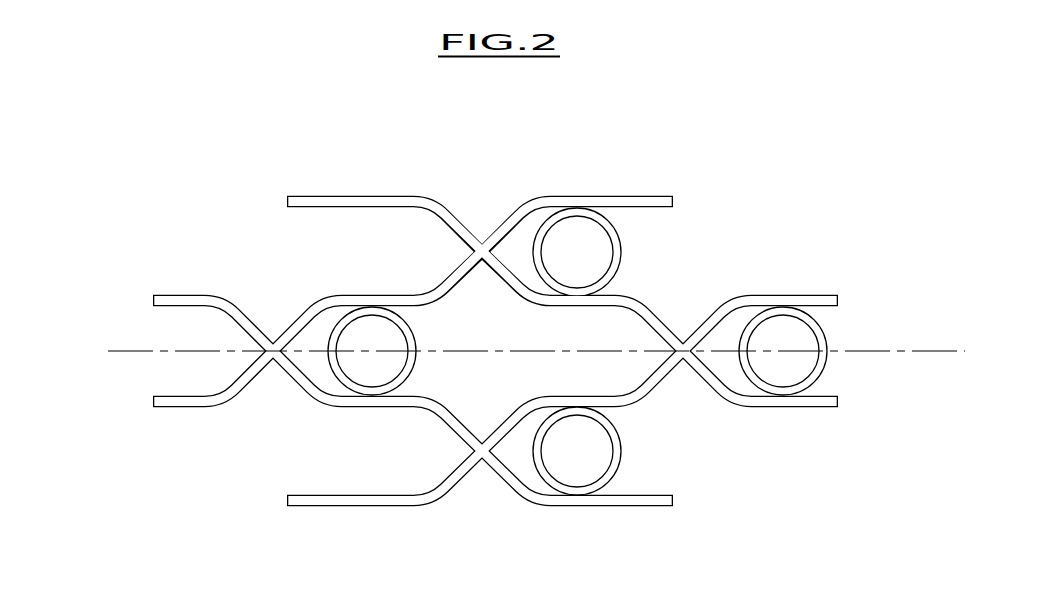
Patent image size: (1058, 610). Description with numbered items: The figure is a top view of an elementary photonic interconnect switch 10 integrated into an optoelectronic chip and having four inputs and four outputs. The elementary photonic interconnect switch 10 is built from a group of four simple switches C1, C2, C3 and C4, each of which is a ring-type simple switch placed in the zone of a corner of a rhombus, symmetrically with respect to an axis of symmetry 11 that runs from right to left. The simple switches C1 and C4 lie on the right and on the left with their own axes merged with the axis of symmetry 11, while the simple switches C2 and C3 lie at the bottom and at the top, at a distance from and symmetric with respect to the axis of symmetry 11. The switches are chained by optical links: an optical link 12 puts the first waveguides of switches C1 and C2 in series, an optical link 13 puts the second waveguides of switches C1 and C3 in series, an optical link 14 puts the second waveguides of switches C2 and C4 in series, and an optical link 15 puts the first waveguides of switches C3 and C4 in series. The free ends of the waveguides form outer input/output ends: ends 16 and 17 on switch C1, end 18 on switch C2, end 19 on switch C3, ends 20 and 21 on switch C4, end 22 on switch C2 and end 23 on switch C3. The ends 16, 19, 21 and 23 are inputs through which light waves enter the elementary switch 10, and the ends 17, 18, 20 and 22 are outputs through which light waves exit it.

The elementary photonic interconnect switch 10 is at (308, 156).
The axis of symmetry 11 is at (935, 350).
The optical link 12 is at (636, 406).
The optical link 13 is at (636, 296).
The optical link 14 is at (421, 407).
The optical link 15 is at (418, 294).
The outer input/output end 16 is at (917, 302).
The outer input/output end 17 is at (907, 398).
The outer input/output end 18 is at (673, 503).
The outer input/output end 19 is at (755, 203).
The outer input/output end 20 is at (128, 402).
The outer input/output end 21 is at (43, 302).
The outer input/output end 22 is at (287, 502).
The outer input/output end 23 is at (205, 203).
The simple switch C1 is at (787, 281).
The simple switch C2 is at (583, 522).
The simple switch C3 is at (585, 183).
The simple switch C4 is at (350, 283).